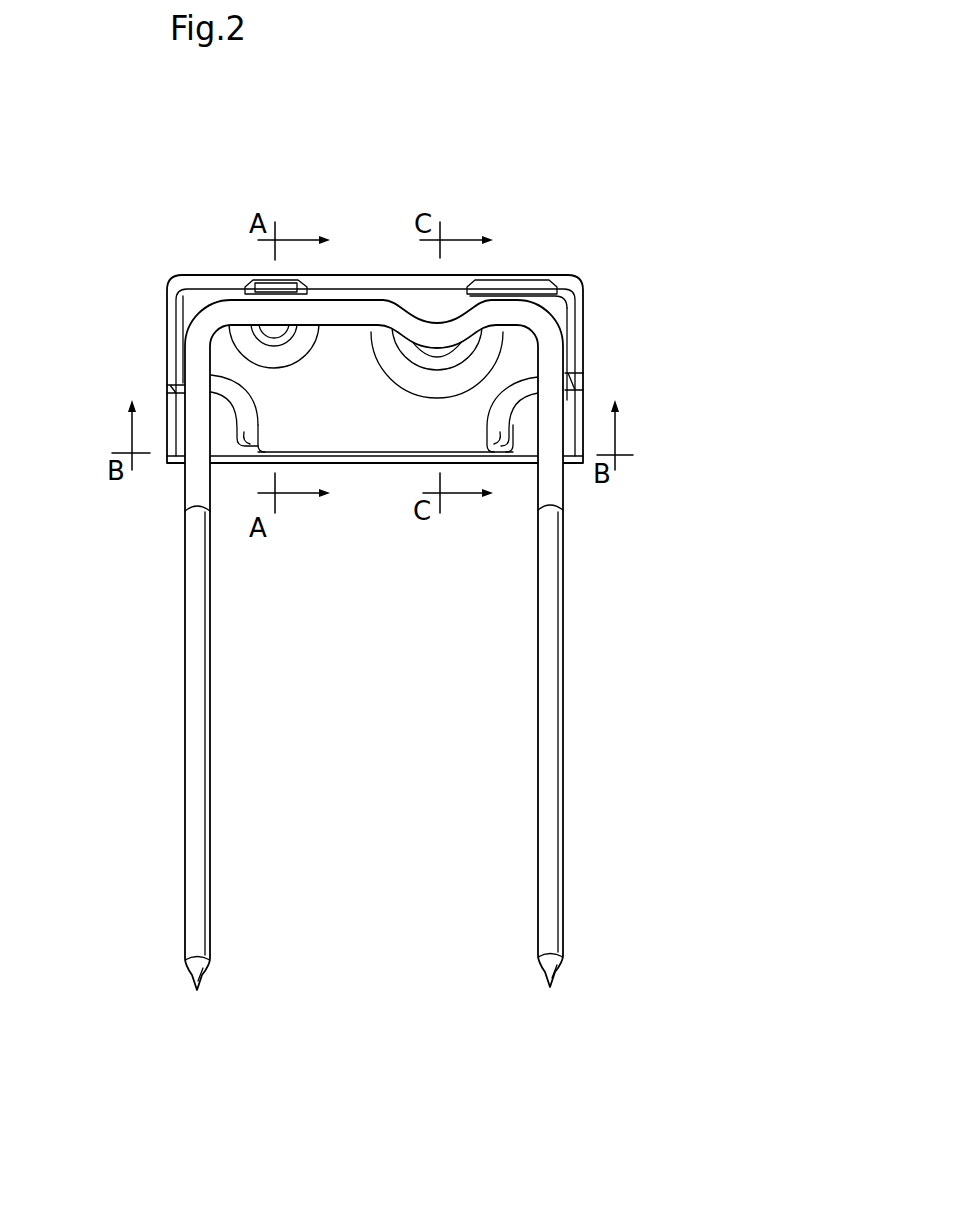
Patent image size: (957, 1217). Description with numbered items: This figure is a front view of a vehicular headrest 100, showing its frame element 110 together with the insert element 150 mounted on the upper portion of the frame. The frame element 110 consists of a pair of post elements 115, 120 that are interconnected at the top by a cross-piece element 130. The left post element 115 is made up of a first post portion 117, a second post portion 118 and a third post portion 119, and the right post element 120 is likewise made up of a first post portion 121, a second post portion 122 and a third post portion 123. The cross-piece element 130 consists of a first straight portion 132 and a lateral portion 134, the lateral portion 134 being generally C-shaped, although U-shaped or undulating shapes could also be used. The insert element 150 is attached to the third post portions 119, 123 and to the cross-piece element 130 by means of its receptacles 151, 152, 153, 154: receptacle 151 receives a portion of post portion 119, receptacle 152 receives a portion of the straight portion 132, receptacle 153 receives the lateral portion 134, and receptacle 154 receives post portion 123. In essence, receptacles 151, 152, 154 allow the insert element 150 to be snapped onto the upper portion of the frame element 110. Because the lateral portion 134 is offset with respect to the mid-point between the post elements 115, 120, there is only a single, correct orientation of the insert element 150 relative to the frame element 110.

The vehicular headrest 100 is at (702, 563).
The frame element 110 is at (390, 680).
The post element 115 is at (195, 973).
The first post portion 117 is at (190, 772).
The second post portion 118 is at (193, 495).
The third post portion 119 is at (190, 390).
The post element 120 is at (550, 988).
The first post portion 121 is at (562, 833).
The second post portion 122 is at (557, 497).
The third post portion 123 is at (557, 392).
The cross-piece element 130 is at (373, 300).
The first straight portion 132 is at (291, 299).
The lateral portion 134 is at (450, 326).
The insert element 150 is at (578, 288).
The receptacle 151 is at (177, 430).
The receptacle 152 is at (213, 280).
The receptacle 153 is at (492, 300).
The receptacle 154 is at (558, 427).